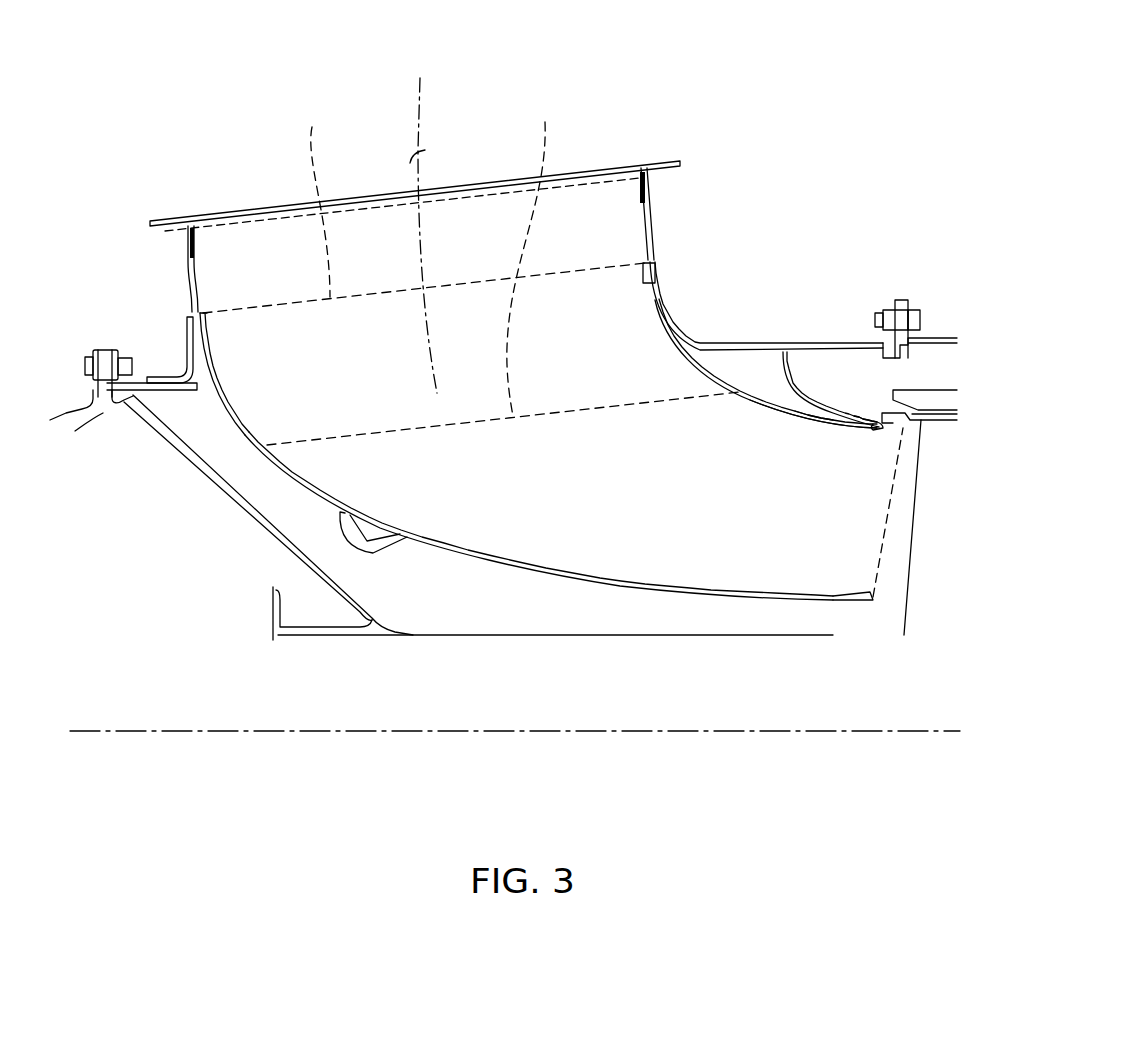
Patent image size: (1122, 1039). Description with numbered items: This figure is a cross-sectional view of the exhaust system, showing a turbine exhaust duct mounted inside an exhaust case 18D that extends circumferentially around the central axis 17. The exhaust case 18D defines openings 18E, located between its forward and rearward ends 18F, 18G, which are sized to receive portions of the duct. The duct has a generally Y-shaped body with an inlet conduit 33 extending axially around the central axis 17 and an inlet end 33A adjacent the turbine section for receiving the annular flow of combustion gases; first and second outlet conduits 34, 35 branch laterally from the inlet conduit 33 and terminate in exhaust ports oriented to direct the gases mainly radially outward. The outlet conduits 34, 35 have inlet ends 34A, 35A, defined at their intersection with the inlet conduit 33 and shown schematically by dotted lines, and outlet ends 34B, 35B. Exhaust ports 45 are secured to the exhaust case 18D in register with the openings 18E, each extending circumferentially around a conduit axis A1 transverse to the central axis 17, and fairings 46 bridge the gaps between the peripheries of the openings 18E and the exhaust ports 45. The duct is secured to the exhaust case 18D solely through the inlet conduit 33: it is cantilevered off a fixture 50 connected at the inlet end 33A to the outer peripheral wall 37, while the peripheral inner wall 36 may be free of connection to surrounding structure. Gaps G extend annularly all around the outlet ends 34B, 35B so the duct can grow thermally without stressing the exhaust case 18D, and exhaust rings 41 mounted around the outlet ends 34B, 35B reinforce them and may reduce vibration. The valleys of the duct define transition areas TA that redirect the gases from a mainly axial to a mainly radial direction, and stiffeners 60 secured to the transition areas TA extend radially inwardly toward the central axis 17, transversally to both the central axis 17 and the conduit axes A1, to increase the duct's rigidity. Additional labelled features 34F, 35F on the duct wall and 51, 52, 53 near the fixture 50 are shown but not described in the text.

The central axis 17 is at (805, 735).
The exhaust case 18D is at (753, 347).
The openings 18E is at (697, 358).
The forward end of the exhaust case 18F is at (97, 342).
The rearward end of the exhaust case 18G is at (929, 303).
The inlet conduit 33 is at (745, 516).
The inlet end 33A is at (893, 510).
The first outlet conduit 34 is at (539, 516).
The second outlet conduit 35 is at (625, 476).
The inlet end of the first outlet conduit 34A is at (547, 254).
The inlet end of the second outlet conduit 35A is at (547, 254).
The outlet end of the first outlet conduit 34B is at (315, 197).
The outlet end of the second outlet conduit 35B is at (315, 197).
The liner wall portion 34F is at (153, 398).
The heat shield wall portion 35F is at (227, 417).
The peripheral inner wall 36 is at (808, 603).
The outer peripheral wall 37 is at (872, 428).
The exhaust rings 41 is at (643, 276).
The exhaust ports 45 is at (180, 201).
The fairings 46 is at (175, 365).
The fixture 50 is at (820, 390).
The first edge 51 is at (817, 407).
The seal wall 52 is at (787, 347).
The second edge 53 is at (873, 432).
The stiffeners 60 is at (337, 542).
The conduit axes A1 is at (424, 220).
The gaps G is at (661, 283).
The transition areas TA is at (278, 480).